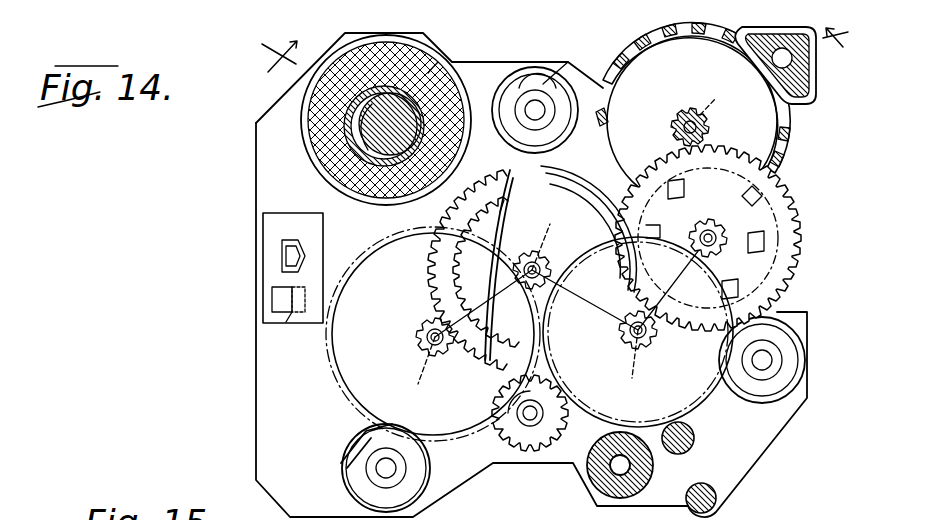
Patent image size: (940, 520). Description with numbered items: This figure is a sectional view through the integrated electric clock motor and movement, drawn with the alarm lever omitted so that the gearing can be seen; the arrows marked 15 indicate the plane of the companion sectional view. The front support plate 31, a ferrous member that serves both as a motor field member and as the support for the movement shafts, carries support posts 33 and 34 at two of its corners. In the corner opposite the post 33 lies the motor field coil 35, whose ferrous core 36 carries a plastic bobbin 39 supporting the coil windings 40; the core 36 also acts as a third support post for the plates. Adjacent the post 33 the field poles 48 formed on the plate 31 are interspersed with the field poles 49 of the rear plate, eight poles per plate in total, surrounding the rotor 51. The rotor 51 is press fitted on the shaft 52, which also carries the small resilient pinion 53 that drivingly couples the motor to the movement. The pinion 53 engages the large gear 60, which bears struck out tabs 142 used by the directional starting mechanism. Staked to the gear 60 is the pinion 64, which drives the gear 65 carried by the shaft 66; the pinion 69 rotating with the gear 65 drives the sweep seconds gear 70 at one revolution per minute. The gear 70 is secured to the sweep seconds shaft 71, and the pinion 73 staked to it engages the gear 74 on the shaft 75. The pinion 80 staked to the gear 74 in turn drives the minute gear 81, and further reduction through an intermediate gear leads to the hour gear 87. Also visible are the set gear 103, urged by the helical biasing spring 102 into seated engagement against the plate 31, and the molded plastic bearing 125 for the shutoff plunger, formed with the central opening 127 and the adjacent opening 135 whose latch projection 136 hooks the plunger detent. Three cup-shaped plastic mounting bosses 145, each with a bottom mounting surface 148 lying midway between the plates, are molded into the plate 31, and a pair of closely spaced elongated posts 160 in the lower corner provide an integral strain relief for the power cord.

The section line of FIG. 15 is at (548, 55).
The front support plate 31 is at (258, 362).
The support post 33 is at (796, 82).
The support post 34 is at (600, 472).
The motor field coil 35 is at (290, 135).
The ferrous core 36 is at (362, 150).
The plastic bobbin 39 is at (300, 102).
The coil windings 40 is at (428, 73).
The field poles 48 is at (612, 82).
The field poles 49 is at (680, 40).
The rotor 51 is at (620, 150).
The shaft 52 is at (672, 125).
The resilient pinion 53 is at (695, 113).
The large gear 60 is at (800, 210).
The pinion 64 is at (692, 236).
The gear 65 is at (694, 382).
The shaft 66 is at (655, 325).
The pinion 69 is at (635, 361).
The sweep seconds gear 70 is at (512, 172).
The sweep seconds shaft 71 is at (568, 268).
The pinion 73 is at (534, 250).
The gear 74 is at (350, 362).
The shaft 75 is at (417, 337).
The pinion 80 is at (420, 368).
The minute gear 81 is at (452, 215).
The hour gear 87 is at (500, 207).
The helical spring 102 is at (512, 425).
The set gear 103 is at (540, 448).
The plastic bearing 125 is at (263, 244).
The central opening 127 is at (282, 256).
The opening 135 is at (272, 297).
The latch projection 136 is at (286, 322).
The struck out tabs 142 is at (711, 233).
The mounting bosses 145 is at (578, 48).
The bottom mounting surface 148 is at (518, 92).
The elongated posts 160 is at (715, 462).